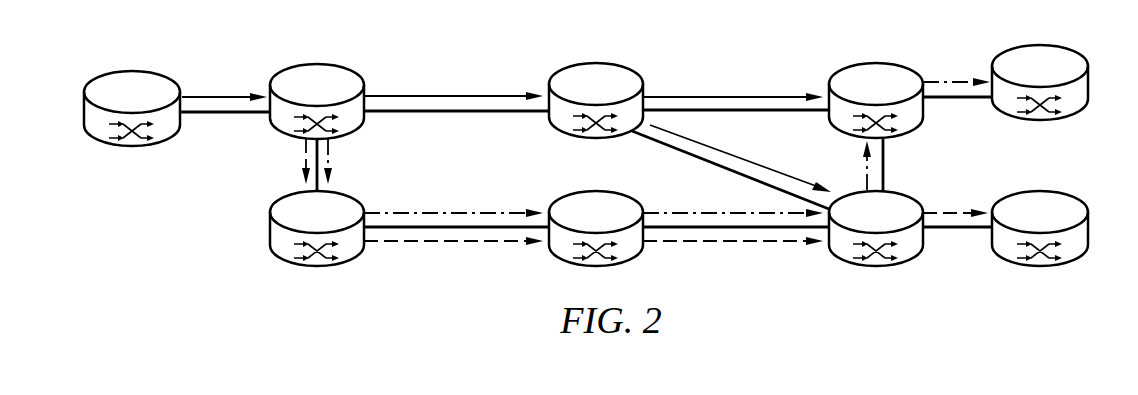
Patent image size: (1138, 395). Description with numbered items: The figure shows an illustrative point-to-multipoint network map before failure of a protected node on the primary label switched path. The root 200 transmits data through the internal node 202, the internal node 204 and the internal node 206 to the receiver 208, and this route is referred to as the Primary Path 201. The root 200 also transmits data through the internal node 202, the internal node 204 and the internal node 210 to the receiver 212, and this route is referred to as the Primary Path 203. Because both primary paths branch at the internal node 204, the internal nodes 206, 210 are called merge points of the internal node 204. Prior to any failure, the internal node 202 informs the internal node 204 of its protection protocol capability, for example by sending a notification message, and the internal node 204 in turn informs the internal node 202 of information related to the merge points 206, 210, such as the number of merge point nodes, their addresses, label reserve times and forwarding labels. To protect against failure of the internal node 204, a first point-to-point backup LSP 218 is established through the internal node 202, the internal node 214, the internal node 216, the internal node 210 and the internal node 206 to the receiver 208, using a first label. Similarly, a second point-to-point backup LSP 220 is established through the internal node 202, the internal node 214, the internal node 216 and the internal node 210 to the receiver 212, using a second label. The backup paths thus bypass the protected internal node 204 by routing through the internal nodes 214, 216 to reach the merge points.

The root 200 is at (160, 74).
The Primary Path 201 is at (226, 96).
The internal node (R3) 202 is at (348, 69).
The Primary Path 203 is at (716, 148).
The internal node (R2) 204 is at (627, 68).
The internal node (R1) 206 is at (859, 64).
The receiver 208 is at (1059, 46).
The internal node (R4) 210 is at (908, 196).
The receiver 212 is at (1072, 196).
The internal node (R6) 214 is at (282, 197).
The internal node (R5) 216 is at (561, 197).
The first P2P backup LSP 218 is at (329, 147).
The second P2P backup LSP 220 is at (304, 155).